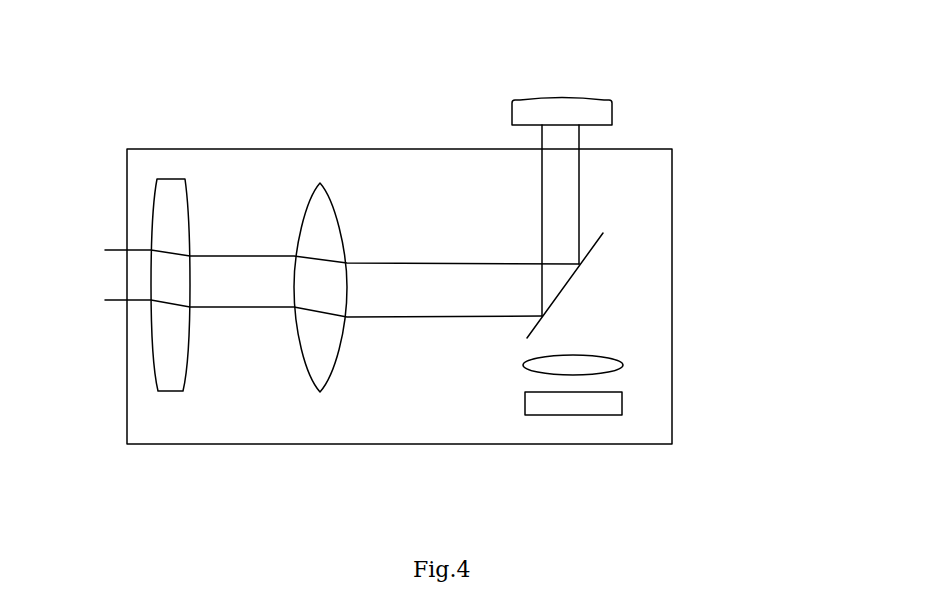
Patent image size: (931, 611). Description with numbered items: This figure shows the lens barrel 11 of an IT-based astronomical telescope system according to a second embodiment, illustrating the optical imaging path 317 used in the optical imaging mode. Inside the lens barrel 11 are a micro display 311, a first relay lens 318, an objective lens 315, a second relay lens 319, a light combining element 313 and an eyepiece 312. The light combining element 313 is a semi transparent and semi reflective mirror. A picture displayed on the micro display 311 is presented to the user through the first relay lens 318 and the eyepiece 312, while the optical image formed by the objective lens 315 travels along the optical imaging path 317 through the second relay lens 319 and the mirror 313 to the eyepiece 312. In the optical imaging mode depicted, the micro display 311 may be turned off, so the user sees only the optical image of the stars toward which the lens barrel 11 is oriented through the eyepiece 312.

The lens barrel 11 is at (650, 181).
The micro display 311 is at (583, 405).
The eyepiece 312 is at (572, 113).
The light combining element 313 is at (592, 250).
The objective lens 315 is at (180, 213).
The optical imaging path 317 is at (444, 265).
The first relay lens 318 is at (605, 358).
The second relay lens 319 is at (315, 237).